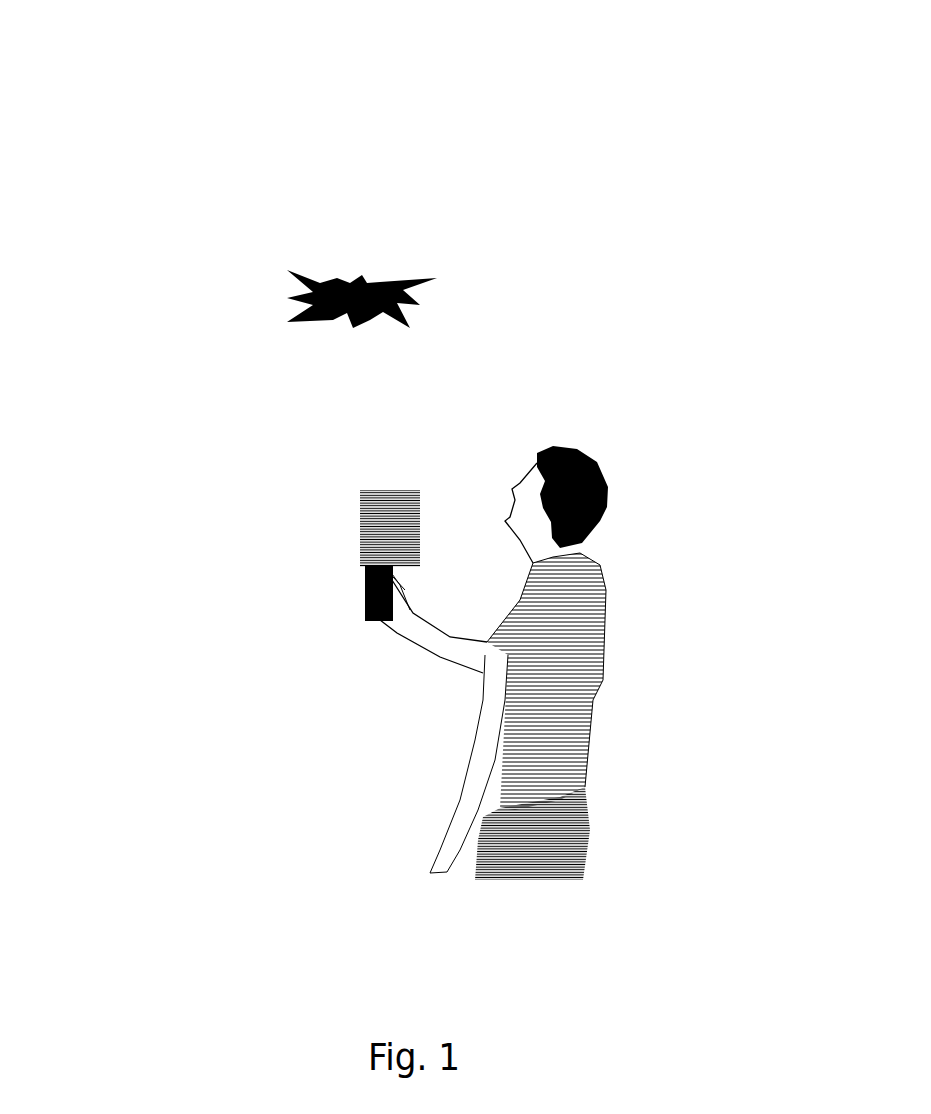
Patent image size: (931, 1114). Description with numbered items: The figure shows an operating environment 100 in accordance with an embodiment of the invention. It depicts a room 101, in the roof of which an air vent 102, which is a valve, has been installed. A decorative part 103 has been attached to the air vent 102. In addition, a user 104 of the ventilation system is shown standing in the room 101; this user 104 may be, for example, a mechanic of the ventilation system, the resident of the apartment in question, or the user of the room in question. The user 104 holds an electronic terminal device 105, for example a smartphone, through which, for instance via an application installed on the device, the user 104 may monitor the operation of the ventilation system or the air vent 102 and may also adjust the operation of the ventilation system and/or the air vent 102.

The operating environment 100 is at (794, 44).
The room 101 is at (657, 272).
The air vent 102 is at (353, 277).
The decorative part 103 is at (300, 276).
The user 104 is at (607, 503).
The electronic terminal device 105 is at (367, 590).